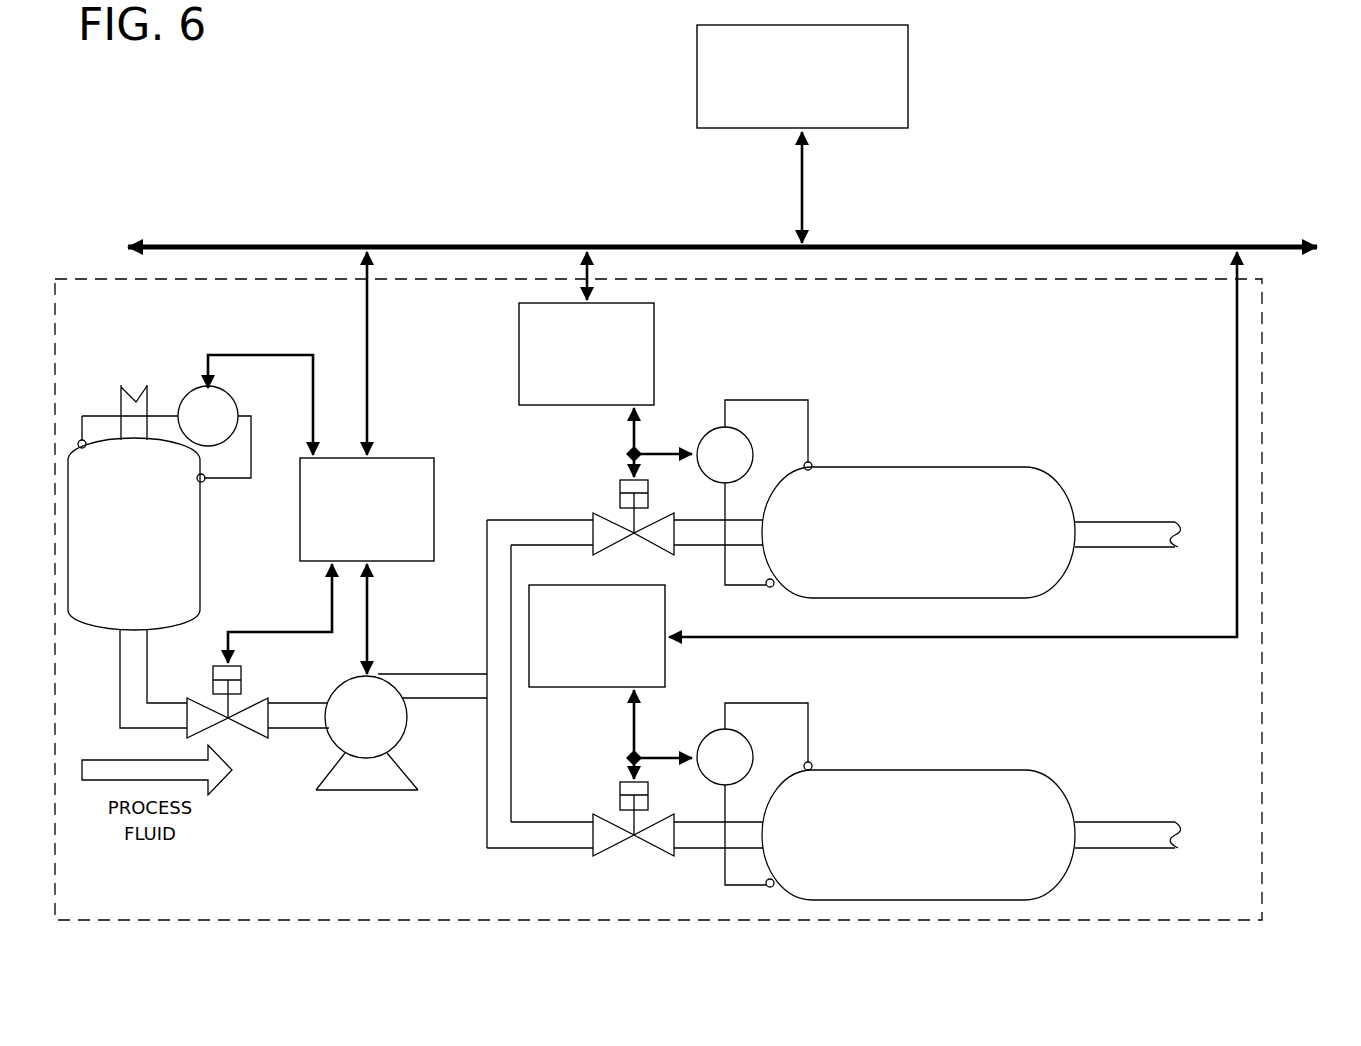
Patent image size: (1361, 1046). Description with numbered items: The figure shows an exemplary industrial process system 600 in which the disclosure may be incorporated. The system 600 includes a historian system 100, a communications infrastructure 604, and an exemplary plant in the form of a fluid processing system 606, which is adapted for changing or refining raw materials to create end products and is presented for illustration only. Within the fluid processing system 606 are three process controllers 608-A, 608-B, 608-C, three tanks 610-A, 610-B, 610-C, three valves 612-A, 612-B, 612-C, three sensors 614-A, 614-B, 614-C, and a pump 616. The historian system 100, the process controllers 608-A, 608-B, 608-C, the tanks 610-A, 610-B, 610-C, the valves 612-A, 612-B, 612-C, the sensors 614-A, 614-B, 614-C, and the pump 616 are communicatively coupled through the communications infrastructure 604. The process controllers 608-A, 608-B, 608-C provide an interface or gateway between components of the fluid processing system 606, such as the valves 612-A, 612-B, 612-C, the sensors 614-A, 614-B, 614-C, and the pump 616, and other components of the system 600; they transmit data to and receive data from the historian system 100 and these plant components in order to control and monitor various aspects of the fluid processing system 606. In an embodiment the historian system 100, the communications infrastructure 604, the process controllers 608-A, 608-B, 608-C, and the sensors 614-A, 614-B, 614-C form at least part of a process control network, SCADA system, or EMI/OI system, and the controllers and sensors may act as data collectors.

The system 600 is at (447, 50).
The historian system 100 is at (786, 101).
The communications infrastructure 604 is at (207, 245).
The fluid processing system 606 is at (1262, 366).
The process controller 608-A is at (434, 462).
The process controller 608-B is at (656, 343).
The process controller 608-C is at (577, 688).
The tank 610-A is at (199, 560).
The tank 610-B is at (940, 467).
The tank 610-C is at (945, 770).
The valve 612-A is at (241, 690).
The valve 612-B is at (620, 492).
The valve 612-C is at (620, 805).
The sensor 614-A is at (190, 398).
The sensor 614-B is at (709, 433).
The sensor 614-C is at (710, 735).
The pump 616 is at (365, 790).